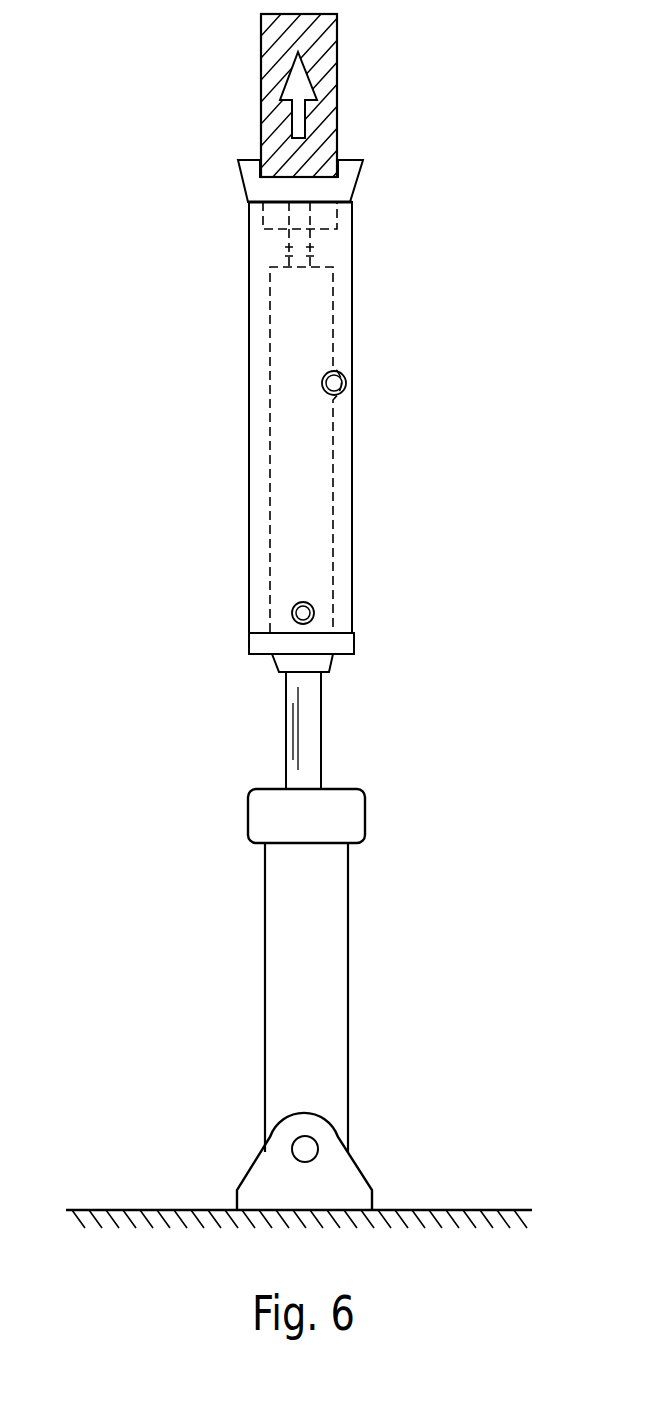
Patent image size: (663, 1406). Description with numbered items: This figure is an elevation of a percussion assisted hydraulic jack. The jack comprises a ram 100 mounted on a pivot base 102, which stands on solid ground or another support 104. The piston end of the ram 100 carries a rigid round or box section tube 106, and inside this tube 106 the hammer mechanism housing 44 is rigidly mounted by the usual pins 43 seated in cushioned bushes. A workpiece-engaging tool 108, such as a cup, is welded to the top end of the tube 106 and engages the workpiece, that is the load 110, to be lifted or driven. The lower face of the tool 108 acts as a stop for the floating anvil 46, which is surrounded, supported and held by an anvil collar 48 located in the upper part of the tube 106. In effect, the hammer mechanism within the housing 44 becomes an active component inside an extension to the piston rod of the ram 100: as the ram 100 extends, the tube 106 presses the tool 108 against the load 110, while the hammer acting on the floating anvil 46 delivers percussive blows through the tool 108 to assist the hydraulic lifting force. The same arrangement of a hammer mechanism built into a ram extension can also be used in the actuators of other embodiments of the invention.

The workpiece (load) 110 is at (332, 78).
The workpiece-engaging tool 108 is at (350, 182).
The tube 106 is at (343, 278).
The anvil collar 48 is at (273, 218).
The floating anvil 46 is at (292, 250).
The hammer mechanism housing 44 is at (297, 347).
The pins 43 is at (345, 377).
The ram 100 is at (330, 972).
The pivot base 102 is at (355, 1177).
The support 104 is at (155, 1209).